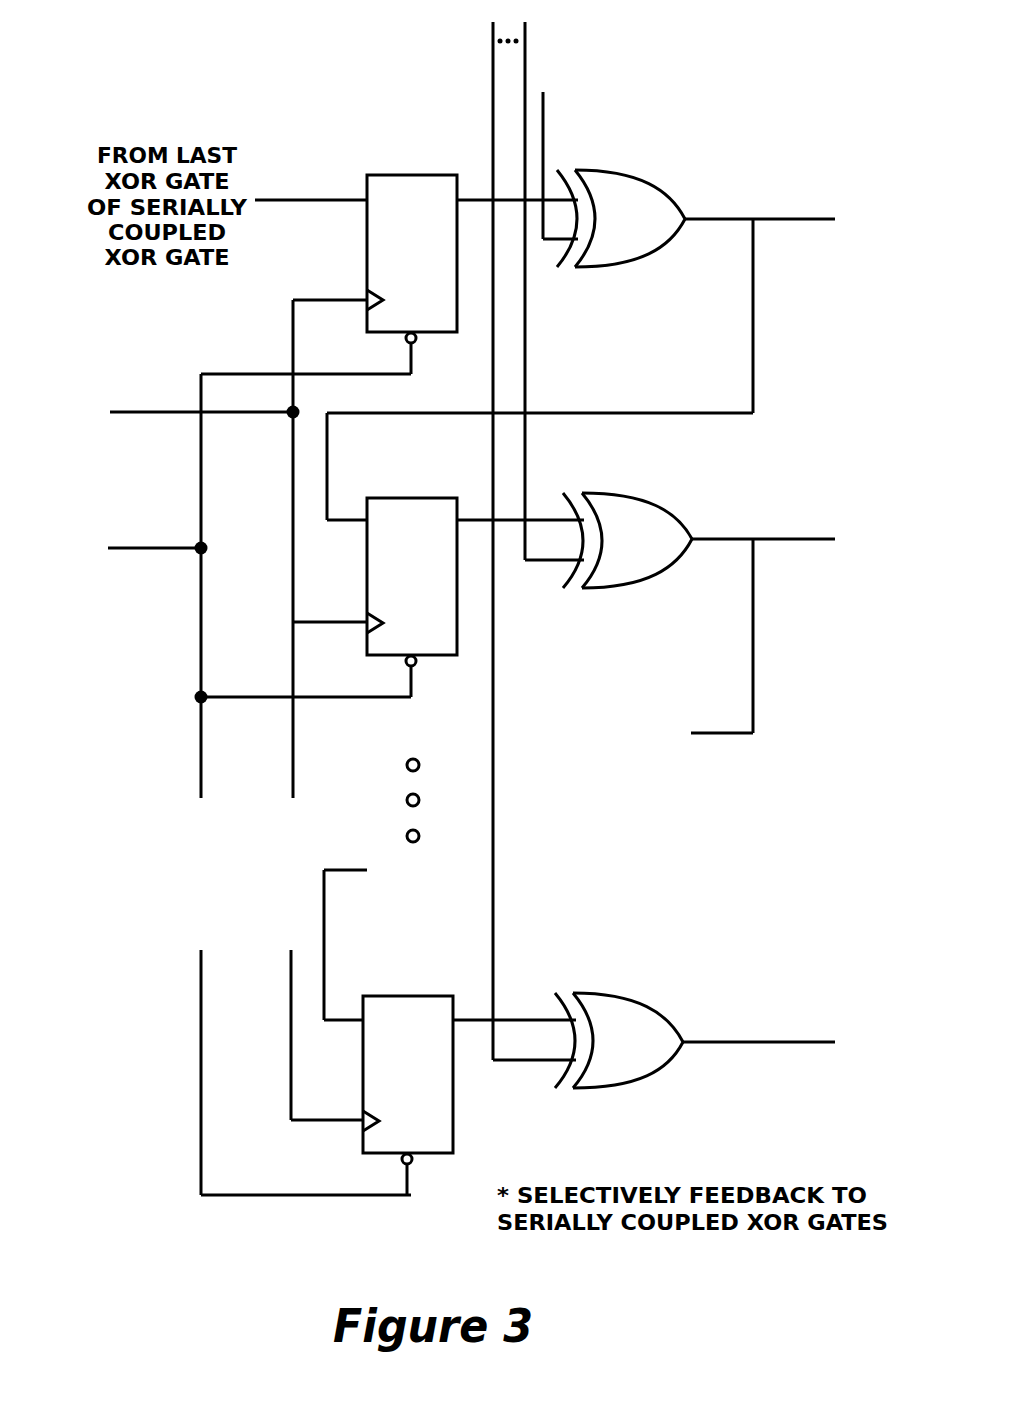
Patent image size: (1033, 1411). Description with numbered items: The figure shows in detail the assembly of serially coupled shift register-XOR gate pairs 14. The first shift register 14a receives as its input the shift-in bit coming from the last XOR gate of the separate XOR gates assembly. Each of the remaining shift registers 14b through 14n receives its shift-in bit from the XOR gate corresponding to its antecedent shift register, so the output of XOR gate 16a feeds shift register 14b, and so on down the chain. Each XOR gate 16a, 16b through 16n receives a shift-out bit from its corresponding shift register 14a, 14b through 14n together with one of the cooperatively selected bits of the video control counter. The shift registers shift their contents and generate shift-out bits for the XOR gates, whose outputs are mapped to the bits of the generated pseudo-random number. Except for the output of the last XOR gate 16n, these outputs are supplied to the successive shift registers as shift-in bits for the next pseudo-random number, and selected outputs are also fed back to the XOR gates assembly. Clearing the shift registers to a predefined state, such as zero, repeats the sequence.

The assembly of serially coupled shift register-XOR gate pairs 14 is at (163, 1279).
The first shift register 14a is at (413, 175).
The shift register 14b is at (413, 498).
The shift register 14n is at (410, 996).
The XOR gate 16a is at (645, 180).
The XOR gate 16b is at (665, 508).
The XOR gate 16n is at (645, 1005).